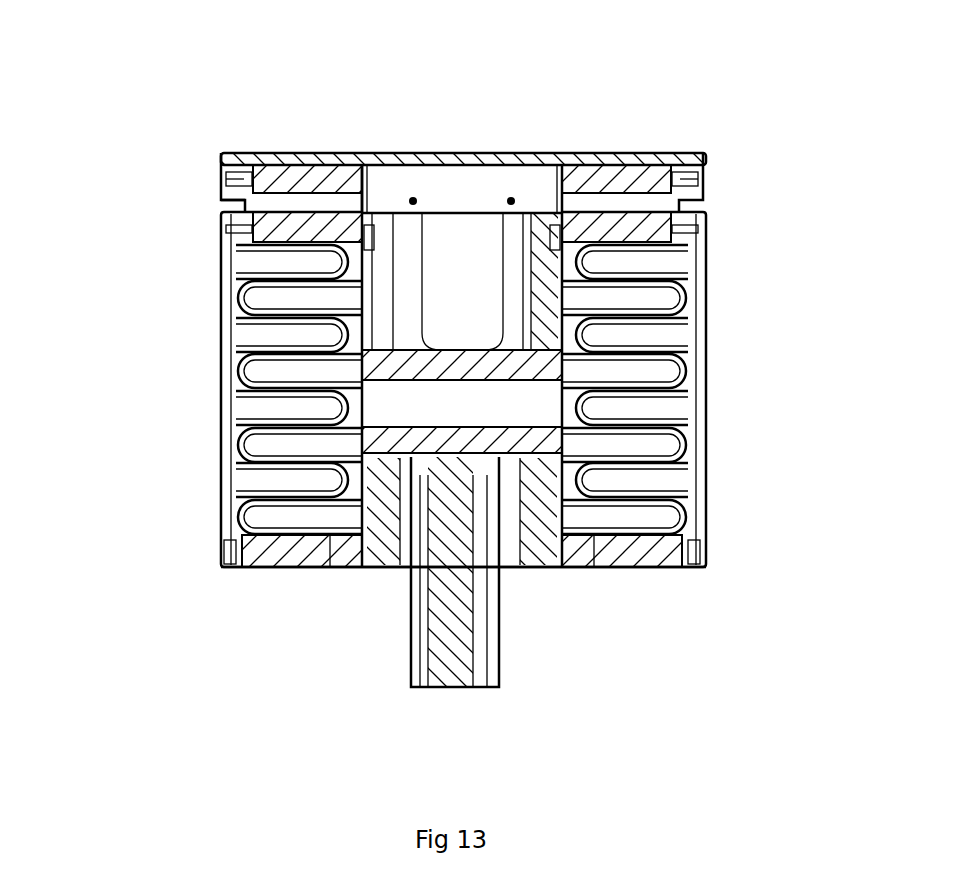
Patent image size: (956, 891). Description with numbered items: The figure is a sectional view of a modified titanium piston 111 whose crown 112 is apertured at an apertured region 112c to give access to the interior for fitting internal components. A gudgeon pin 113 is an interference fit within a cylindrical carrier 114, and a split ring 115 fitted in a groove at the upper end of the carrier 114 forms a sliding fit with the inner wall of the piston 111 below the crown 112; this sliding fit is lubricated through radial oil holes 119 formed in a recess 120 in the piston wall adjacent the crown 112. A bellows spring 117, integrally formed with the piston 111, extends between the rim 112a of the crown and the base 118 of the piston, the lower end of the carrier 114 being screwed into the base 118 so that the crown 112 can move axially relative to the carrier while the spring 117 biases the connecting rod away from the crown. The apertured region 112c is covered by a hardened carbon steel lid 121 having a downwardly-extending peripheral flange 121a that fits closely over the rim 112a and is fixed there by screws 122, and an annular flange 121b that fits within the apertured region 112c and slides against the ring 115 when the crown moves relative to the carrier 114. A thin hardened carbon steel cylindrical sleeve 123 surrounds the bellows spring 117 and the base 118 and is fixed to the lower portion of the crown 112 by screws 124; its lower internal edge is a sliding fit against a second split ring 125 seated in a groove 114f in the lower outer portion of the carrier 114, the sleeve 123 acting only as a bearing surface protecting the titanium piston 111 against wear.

The piston 111 is at (185, 491).
The crown 112 is at (285, 153).
The rim 112a is at (217, 191).
The apertured region 112c is at (385, 153).
The gudgeon pin 113 is at (462, 366).
The carrier 114 is at (360, 560).
The groove 114f is at (250, 556).
The split ring 115 is at (567, 233).
The bellows spring 117 is at (600, 329).
The base 118 is at (622, 537).
The oil holes 119 is at (512, 197).
The recess 120 is at (680, 198).
The lid 121 is at (450, 153).
The peripheral flange 121a is at (219, 160).
The annular flange 121b is at (597, 153).
The screws 122 is at (224, 177).
The cylindrical sleeve 123 is at (707, 415).
The screws 124 is at (224, 233).
The split ring 125 is at (707, 553).